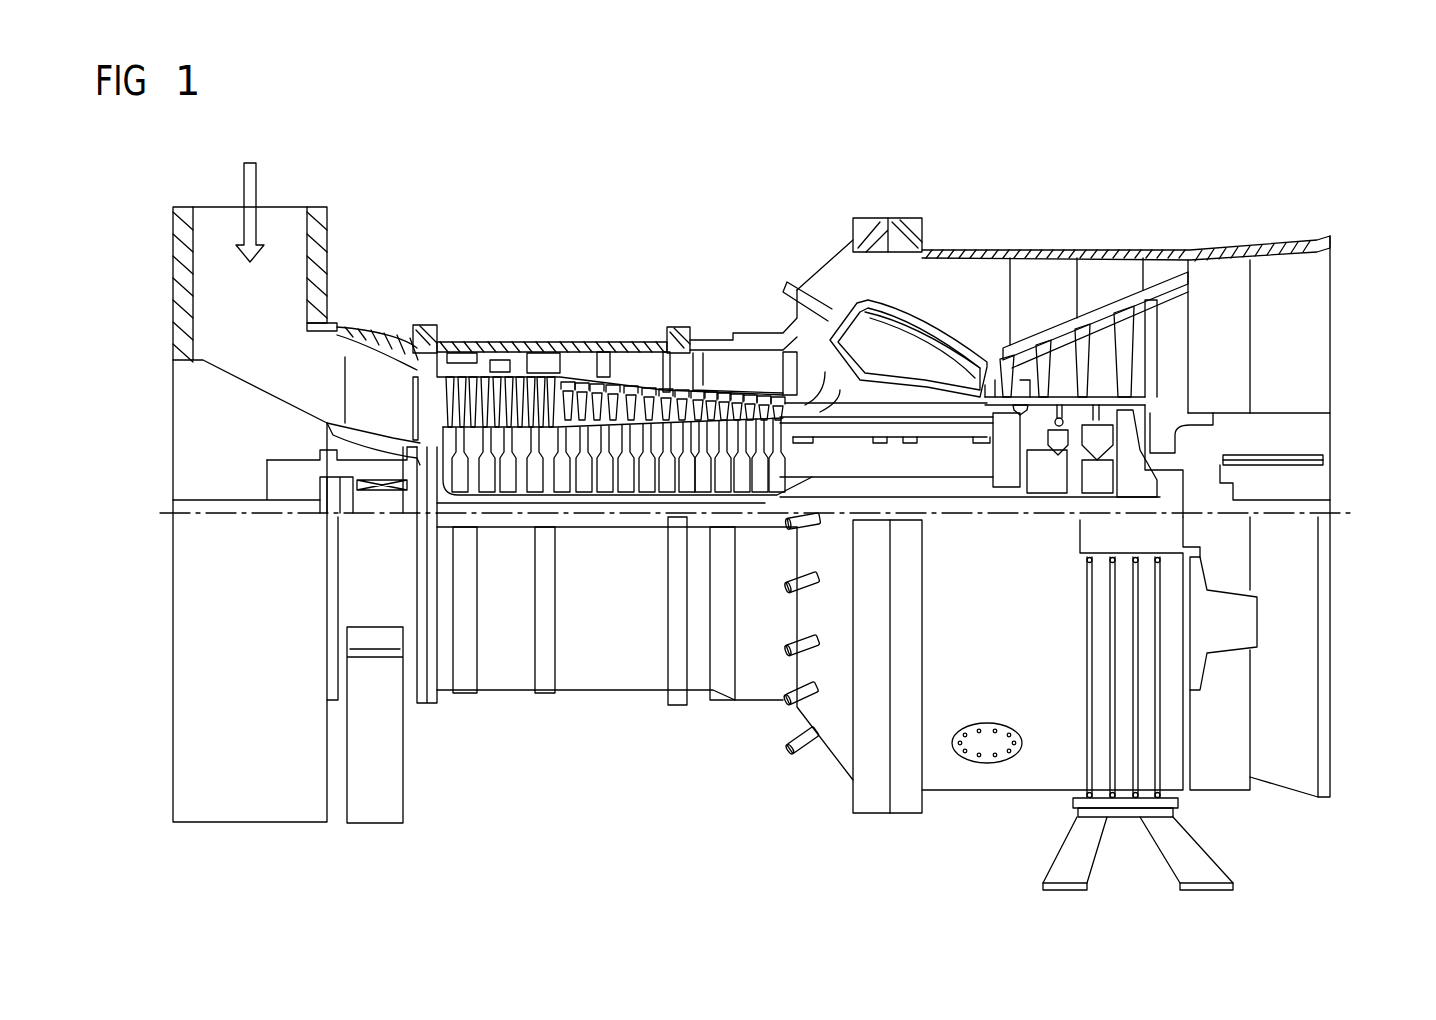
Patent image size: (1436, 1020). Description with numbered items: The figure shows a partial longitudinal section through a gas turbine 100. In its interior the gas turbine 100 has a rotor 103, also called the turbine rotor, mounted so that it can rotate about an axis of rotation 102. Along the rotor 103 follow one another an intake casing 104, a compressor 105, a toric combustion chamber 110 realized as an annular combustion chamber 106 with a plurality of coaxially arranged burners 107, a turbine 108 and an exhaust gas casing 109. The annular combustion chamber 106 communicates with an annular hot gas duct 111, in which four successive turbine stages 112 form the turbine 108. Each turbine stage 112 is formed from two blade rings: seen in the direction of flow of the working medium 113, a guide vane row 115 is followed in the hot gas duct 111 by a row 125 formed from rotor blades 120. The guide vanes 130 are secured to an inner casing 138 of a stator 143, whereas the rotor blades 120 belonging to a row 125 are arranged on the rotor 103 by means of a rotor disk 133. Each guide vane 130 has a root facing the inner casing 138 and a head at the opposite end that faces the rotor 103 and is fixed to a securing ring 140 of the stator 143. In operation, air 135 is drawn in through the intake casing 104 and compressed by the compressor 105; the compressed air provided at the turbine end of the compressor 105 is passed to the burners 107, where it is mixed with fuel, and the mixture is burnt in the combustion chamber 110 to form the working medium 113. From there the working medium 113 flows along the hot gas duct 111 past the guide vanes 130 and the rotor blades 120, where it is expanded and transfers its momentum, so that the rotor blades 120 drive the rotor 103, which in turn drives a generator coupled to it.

The gas turbine 100 is at (601, 222).
The axis of rotation 102 is at (167, 511).
The rotor 103 is at (822, 480).
The intake casing 104 is at (317, 272).
The compressor 105 is at (517, 322).
The annular combustion chamber 106 is at (962, 358).
The burners 107 is at (793, 286).
The turbine 108 is at (1013, 218).
The exhaust gas casing 109 is at (1240, 248).
The combustion chamber 110 is at (882, 322).
The hot gas duct 111 is at (1173, 338).
The turbine stages 112 is at (1142, 218).
The working medium 113 is at (882, 357).
The guide vane row 115 is at (1098, 292).
The rotor blades 120 is at (1058, 425).
The row 125 is at (1160, 268).
The guide vanes 130 is at (1007, 378).
The rotor disk 133 is at (1112, 470).
The air 135 is at (257, 197).
The inner casing 138 is at (1043, 300).
The securing ring 140 is at (987, 367).
The stator 143 is at (973, 252).